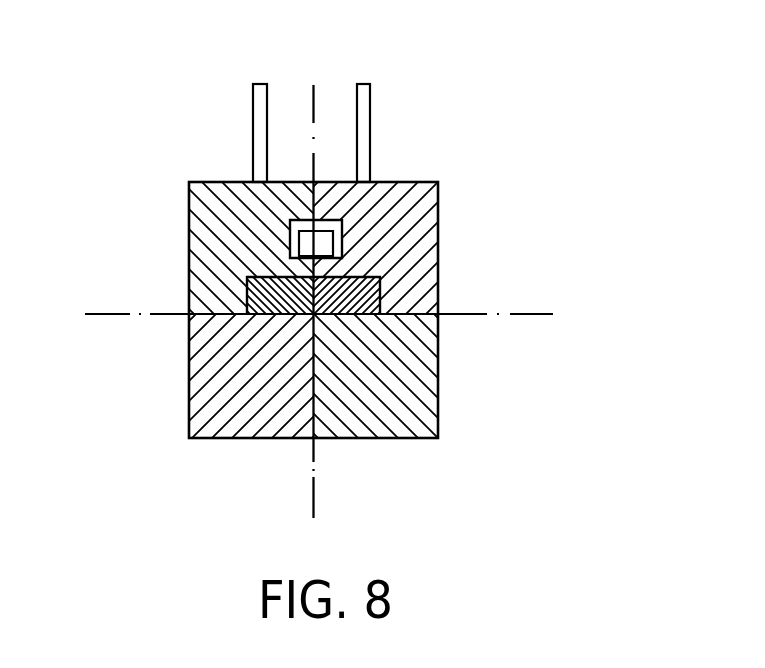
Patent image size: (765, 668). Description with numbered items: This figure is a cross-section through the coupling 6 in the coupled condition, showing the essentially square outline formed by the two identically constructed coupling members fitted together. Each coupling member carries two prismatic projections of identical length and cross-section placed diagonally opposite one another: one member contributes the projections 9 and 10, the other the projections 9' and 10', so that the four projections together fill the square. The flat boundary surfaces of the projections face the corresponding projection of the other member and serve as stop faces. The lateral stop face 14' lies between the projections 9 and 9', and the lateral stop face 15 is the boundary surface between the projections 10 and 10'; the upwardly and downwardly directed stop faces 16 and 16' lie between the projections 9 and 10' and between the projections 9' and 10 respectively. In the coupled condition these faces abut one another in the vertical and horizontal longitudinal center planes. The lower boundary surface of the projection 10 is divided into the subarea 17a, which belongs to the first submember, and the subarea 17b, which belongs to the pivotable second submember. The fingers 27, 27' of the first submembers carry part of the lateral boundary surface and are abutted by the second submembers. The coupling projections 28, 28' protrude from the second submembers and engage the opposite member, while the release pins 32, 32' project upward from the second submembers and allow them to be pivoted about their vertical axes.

The coupling 6 is at (450, 472).
The prismatic projection 9 is at (375, 376).
The prismatic projection 9' is at (255, 376).
The prismatic projection 10 is at (250, 170).
The prismatic projection 10' is at (370, 170).
The lateral stop face 14' is at (253, 478).
The lateral stop face 15 is at (322, 224).
The stop face 16 is at (451, 342).
The stop face 16' is at (175, 343).
The subarea of lower boundary surface 17a is at (317, 338).
The subarea of lower boundary surface 17b is at (228, 318).
The finger 27 is at (216, 279).
The finger 27' is at (419, 279).
The coupling projection 28 is at (431, 215).
The coupling projection 28' is at (211, 215).
The release pin 32 is at (250, 96).
The release pin 32' is at (387, 96).